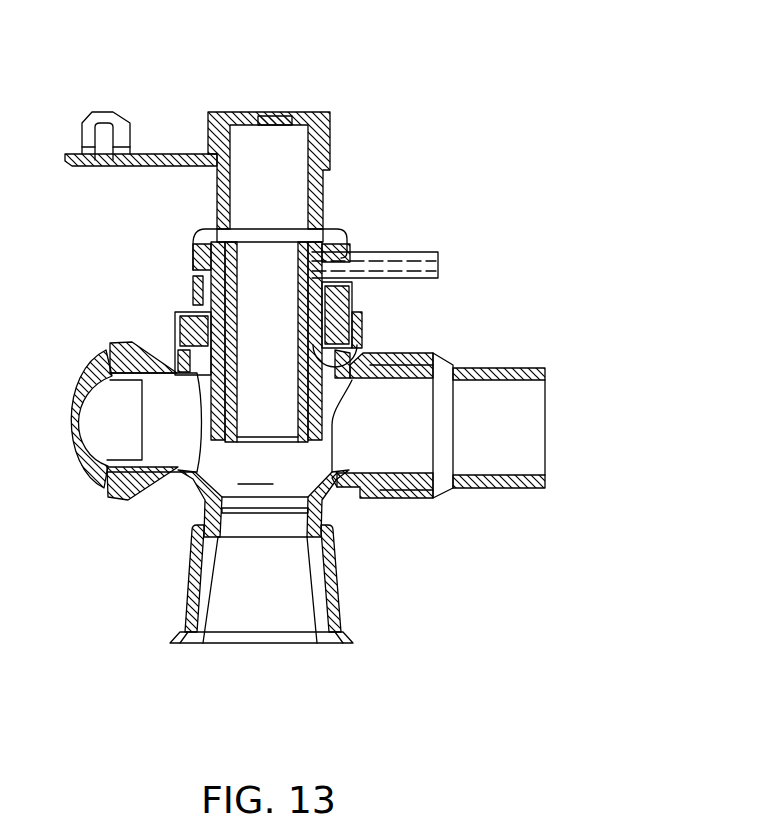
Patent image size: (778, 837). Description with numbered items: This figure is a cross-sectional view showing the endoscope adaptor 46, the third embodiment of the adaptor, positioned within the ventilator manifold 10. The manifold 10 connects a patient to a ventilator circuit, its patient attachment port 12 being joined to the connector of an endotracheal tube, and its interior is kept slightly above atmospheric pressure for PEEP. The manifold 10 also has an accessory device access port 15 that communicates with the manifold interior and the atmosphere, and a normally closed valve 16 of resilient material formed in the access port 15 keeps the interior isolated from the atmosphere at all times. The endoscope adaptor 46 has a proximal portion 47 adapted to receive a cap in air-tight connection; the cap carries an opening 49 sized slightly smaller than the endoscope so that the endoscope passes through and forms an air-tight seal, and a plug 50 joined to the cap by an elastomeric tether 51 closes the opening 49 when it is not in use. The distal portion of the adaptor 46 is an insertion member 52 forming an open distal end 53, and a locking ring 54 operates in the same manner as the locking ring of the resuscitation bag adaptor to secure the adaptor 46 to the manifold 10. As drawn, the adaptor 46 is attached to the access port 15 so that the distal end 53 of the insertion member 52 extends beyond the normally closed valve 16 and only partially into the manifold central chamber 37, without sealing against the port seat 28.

The ventilator manifold 10 is at (190, 500).
The patient attachment port 12 is at (349, 600).
The accessory device access port 15 is at (357, 300).
The normally closed valve 16 is at (352, 352).
The port seat 28 is at (272, 512).
The manifold central chamber 37 is at (255, 465).
The endoscope adaptor 46 is at (341, 159).
The proximal portion 47 is at (325, 205).
The opening 49 is at (275, 113).
The plug 50 is at (126, 117).
The elastomeric tether 51 is at (158, 170).
The insertion member 52 is at (193, 292).
The open distal end 53 is at (340, 480).
The locking ring 54 is at (349, 236).